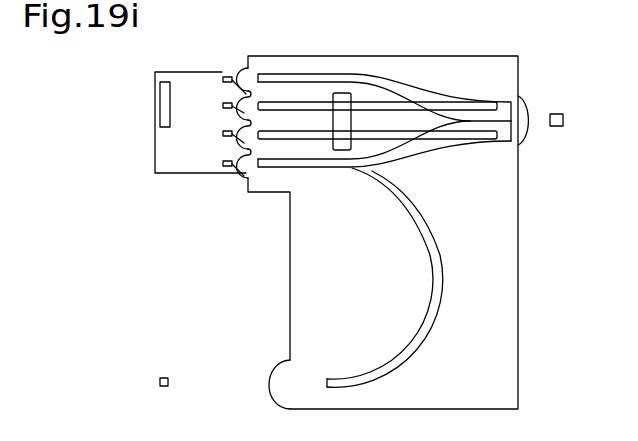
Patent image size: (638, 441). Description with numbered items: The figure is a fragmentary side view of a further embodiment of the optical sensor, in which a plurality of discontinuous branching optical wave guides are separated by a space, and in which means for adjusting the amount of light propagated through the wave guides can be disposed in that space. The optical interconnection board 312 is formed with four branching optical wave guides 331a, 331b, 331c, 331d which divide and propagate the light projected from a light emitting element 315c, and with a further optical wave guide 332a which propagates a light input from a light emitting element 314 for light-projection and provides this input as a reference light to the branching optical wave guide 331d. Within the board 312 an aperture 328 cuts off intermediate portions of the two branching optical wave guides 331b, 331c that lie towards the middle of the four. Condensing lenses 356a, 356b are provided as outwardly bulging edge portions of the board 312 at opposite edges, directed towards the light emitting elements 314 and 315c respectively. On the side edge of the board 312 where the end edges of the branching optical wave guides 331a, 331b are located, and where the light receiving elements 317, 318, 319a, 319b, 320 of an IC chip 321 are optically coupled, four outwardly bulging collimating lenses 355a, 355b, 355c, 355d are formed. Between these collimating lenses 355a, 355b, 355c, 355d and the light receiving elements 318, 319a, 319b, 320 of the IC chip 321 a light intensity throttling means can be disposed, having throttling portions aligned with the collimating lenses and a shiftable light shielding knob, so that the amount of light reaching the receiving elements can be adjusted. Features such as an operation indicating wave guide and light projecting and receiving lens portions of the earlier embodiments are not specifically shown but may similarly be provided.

The optical interconnection board 312 is at (505, 252).
The light emitting element 314 is at (170, 388).
The light emitting element 315c is at (565, 113).
The light receiving element 317 is at (158, 88).
The light receiving element 318 is at (227, 77).
The light receiving element 319a is at (223, 106).
The light receiving element 319b is at (223, 134).
The light receiving element 320 is at (240, 174).
The IC chip 321 is at (155, 168).
The aperture 328 is at (343, 93).
The branching optical wave guide 331a is at (324, 78).
The branching optical wave guide 331b is at (277, 103).
The branching optical wave guide 331c is at (381, 137).
The branching optical wave guide 331d is at (398, 156).
The optical wave guide 332a is at (423, 338).
The collimating lens 355a is at (240, 72).
The collimating lens 355b is at (246, 94).
The collimating lens 355c is at (213, 156).
The collimating lens 355d is at (241, 175).
The condensing lens 356a is at (277, 372).
The condensing lens 356b is at (525, 107).